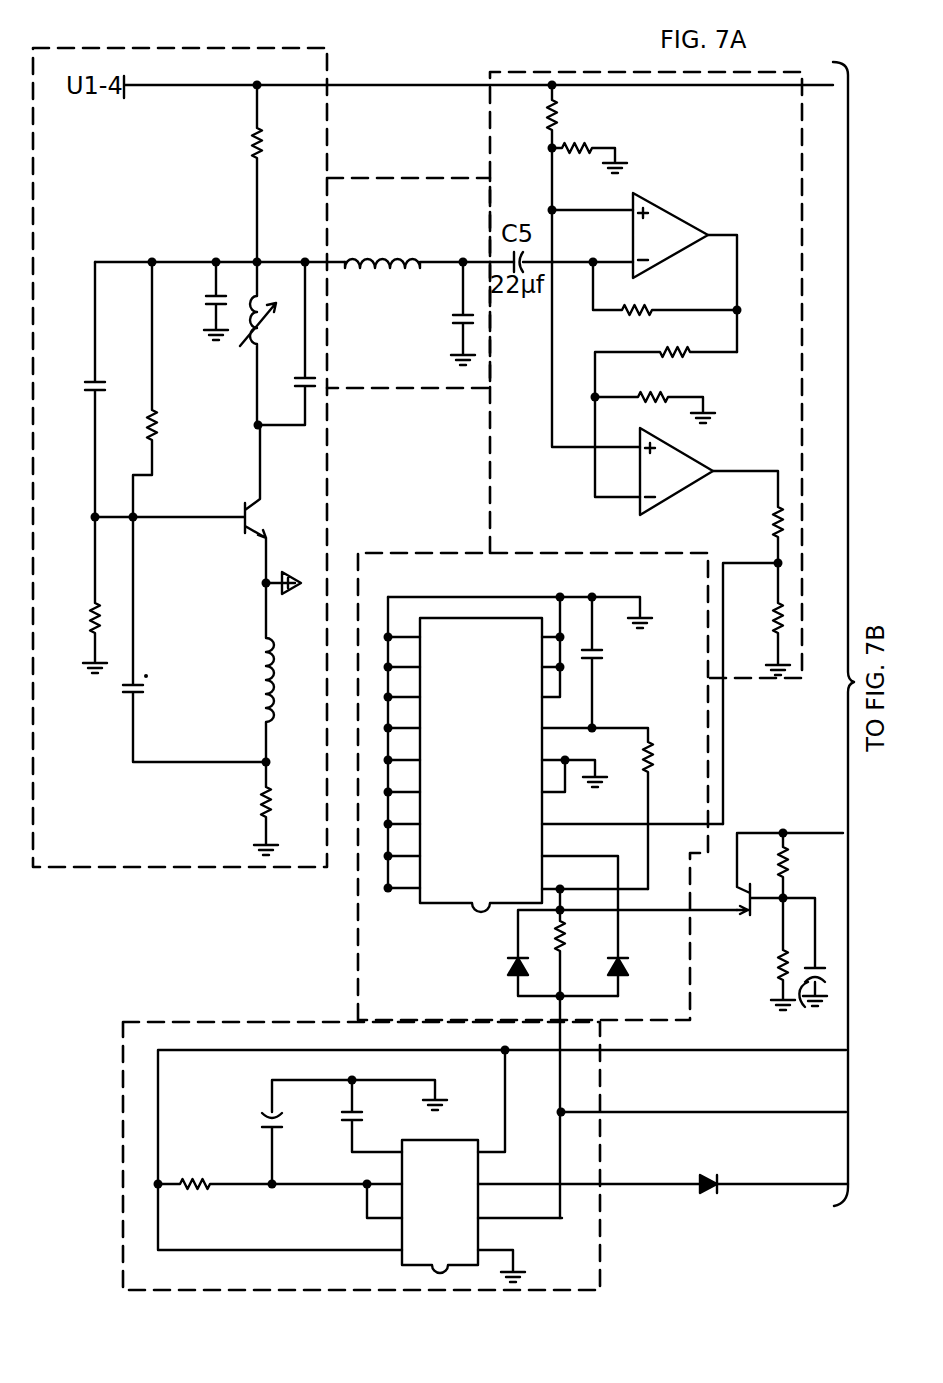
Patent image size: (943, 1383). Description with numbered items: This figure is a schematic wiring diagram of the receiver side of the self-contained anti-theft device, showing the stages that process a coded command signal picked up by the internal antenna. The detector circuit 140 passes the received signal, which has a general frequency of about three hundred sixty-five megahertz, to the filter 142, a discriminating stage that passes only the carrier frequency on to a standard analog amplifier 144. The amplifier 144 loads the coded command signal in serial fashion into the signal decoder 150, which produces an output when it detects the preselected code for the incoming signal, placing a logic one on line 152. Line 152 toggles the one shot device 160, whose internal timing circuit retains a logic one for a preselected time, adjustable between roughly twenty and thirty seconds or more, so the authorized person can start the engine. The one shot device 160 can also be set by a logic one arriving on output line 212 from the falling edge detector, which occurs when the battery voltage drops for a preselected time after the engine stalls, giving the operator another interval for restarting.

The detector circuit 140 is at (160, 867).
The filter 142 is at (418, 175).
The analog amplifier 144 is at (598, 72).
The signal decoder 150 is at (437, 553).
The one shot device 160 is at (250, 1020).
The line 152 is at (565, 1087).
The output line 212 is at (675, 1112).